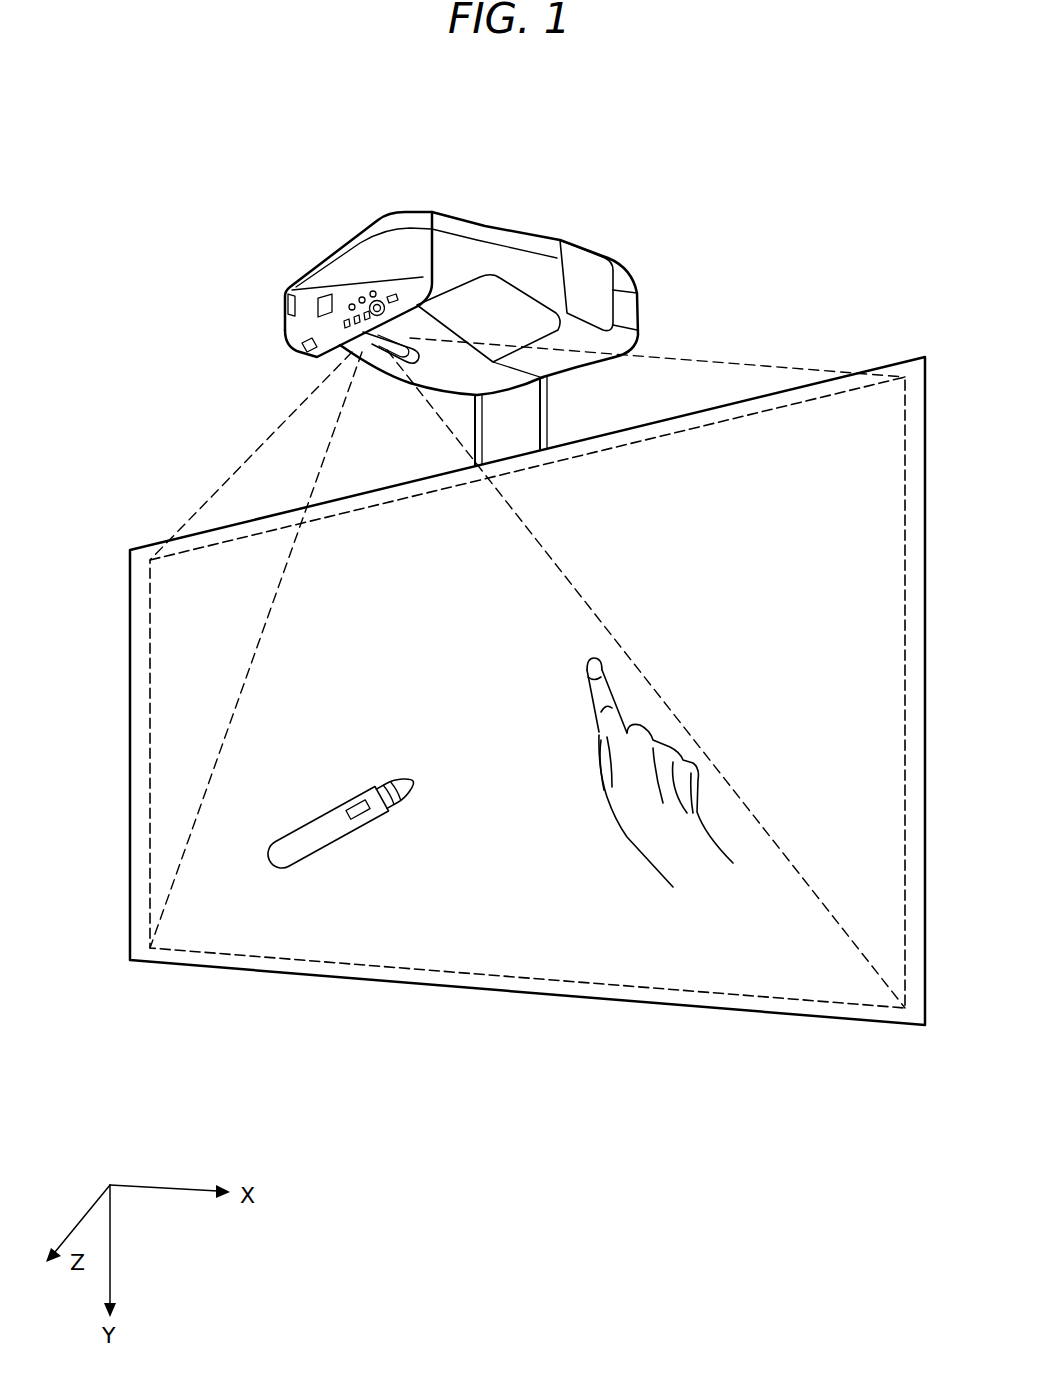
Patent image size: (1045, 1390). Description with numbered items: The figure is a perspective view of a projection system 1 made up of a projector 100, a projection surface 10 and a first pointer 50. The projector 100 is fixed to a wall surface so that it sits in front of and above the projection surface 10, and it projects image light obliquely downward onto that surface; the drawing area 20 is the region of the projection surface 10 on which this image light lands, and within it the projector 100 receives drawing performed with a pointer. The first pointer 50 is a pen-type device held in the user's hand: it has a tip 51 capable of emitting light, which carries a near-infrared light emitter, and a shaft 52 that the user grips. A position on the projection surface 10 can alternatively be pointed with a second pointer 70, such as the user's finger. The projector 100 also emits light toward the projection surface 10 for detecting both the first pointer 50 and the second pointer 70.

The projection system 1 is at (773, 246).
The projection surface 10 is at (128, 782).
The drawing area 20 is at (148, 662).
The projector 100 is at (485, 224).
The first pointer 50 is at (291, 809).
The tip 51 is at (416, 780).
The shaft 52 is at (332, 830).
The second pointer 70 is at (585, 665).